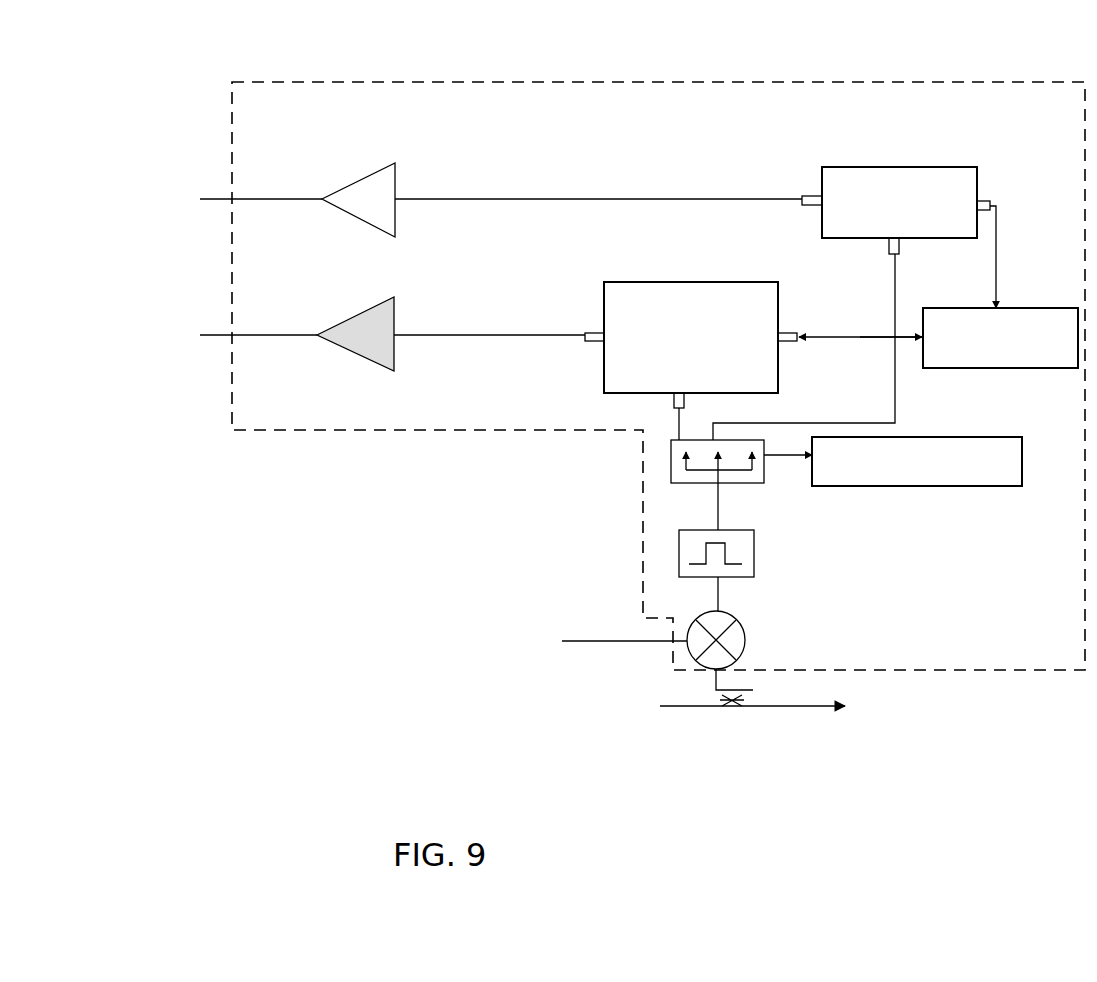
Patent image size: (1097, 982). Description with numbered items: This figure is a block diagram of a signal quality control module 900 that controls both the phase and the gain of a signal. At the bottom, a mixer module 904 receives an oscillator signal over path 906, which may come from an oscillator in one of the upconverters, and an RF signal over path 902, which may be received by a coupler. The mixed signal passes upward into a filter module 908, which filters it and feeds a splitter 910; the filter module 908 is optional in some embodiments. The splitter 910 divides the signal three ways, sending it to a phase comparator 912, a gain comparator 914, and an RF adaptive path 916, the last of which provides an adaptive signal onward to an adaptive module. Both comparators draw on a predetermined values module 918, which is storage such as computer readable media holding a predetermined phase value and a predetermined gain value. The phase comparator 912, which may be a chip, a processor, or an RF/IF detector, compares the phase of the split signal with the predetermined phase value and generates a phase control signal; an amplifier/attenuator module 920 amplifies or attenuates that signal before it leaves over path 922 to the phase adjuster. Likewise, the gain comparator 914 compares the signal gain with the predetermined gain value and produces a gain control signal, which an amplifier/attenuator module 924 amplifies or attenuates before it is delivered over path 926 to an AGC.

The signal quality control module 900 is at (703, 81).
The path 902 is at (733, 712).
The mixer module 904 is at (747, 636).
The path 906 is at (592, 650).
The filter module 908 is at (754, 552).
The splitter 910 is at (671, 460).
The phase comparator 912 is at (700, 282).
The gain comparator 914 is at (905, 167).
The RF adaptive path 916 is at (923, 490).
The predetermined values module 918 is at (1000, 368).
The amplifier/attenuator module 920 is at (388, 364).
The path 922 is at (215, 340).
The amplifier/attenuator module 924 is at (385, 163).
The path 926 is at (220, 205).